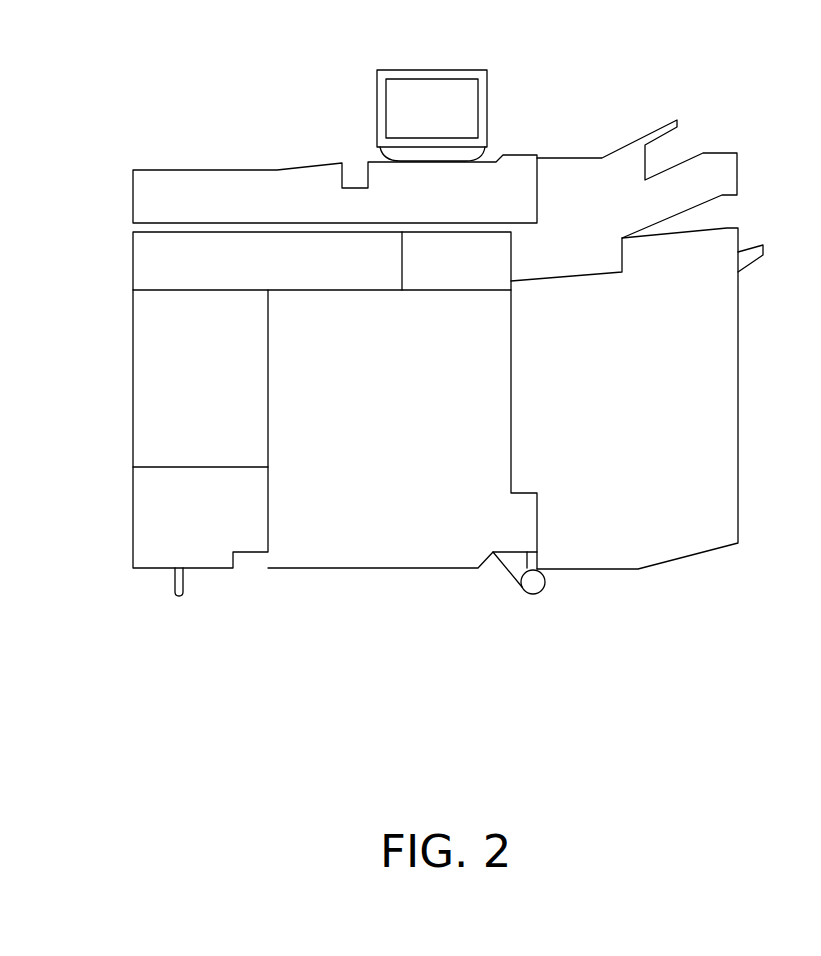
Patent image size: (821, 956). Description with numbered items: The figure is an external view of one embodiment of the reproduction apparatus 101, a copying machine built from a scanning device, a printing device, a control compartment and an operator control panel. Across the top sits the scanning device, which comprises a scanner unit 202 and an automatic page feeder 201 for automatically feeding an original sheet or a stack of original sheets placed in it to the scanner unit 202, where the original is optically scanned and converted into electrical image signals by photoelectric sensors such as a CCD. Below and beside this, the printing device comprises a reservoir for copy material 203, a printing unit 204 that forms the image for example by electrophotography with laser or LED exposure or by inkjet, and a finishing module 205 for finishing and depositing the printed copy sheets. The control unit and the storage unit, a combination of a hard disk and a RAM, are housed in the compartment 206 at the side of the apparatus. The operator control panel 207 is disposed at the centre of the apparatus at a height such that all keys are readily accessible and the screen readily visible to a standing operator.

The reproduction apparatus 101 is at (652, 71).
The automatic page feeder 201 is at (253, 183).
The scanner unit 202 is at (152, 275).
The reservoir for copy material 203 is at (728, 387).
The printing unit 204 is at (400, 562).
The finishing module 205 is at (728, 172).
The compartment 206 is at (152, 410).
The operator control panel 207 is at (383, 85).